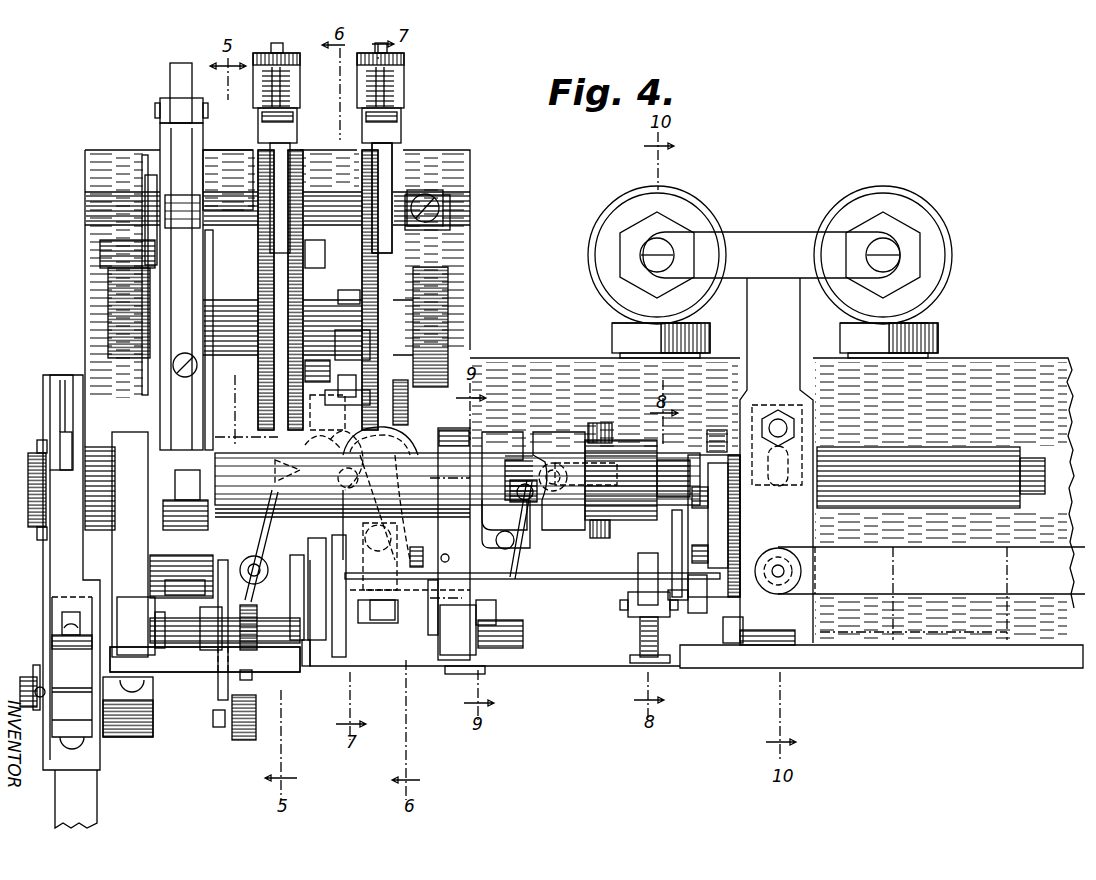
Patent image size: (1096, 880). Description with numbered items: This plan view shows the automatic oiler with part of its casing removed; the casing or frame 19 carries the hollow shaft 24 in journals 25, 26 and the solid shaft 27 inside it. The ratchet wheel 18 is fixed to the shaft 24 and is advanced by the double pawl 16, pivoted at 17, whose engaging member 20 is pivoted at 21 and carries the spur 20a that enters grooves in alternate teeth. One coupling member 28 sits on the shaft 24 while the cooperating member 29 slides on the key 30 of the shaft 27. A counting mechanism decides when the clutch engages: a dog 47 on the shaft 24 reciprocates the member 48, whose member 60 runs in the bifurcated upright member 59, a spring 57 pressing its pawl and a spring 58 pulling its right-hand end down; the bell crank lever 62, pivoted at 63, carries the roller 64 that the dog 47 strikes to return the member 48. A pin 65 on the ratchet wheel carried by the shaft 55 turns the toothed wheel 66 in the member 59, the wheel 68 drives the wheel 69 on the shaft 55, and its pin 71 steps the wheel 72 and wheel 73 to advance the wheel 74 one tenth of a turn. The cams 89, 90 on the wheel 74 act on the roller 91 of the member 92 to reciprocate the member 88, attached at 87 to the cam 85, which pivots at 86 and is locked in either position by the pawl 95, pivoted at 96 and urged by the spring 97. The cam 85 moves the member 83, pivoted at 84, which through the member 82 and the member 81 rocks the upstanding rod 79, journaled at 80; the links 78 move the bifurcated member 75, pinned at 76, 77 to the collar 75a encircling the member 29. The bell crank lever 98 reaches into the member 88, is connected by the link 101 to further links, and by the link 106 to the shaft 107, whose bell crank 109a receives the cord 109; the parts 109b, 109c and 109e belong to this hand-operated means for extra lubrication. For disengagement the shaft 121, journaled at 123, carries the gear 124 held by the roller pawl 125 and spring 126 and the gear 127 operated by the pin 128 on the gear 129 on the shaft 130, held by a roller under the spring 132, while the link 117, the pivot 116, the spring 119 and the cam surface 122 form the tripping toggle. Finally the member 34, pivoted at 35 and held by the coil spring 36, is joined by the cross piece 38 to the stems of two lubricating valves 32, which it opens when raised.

The spring 58 is at (200, 112).
The upright member 59 is at (182, 143).
The spring 57 is at (190, 312).
The member 48 is at (200, 178).
The toothed wheel 66 is at (165, 222).
The pin 65 is at (108, 288).
The shaft 55 is at (105, 325).
The member 60 is at (206, 262).
The second toothed wheel 68 is at (252, 290).
The wheel 69 is at (293, 293).
The wheel 72 is at (322, 254).
The cam 90 is at (346, 290).
The cam 89 is at (352, 332).
The roller 91 is at (346, 375).
The pin 71 is at (312, 378).
The member 88 is at (320, 530).
The member 92 is at (327, 412).
The wheel 73 is at (380, 195).
The wheel 74 is at (412, 256).
The lubricating valve 32 is at (690, 218).
The cross piece 38 is at (776, 233).
The member 34 is at (780, 330).
The solid shaft 27 is at (1030, 465).
The casing 19 is at (1022, 506).
The coil spring 36 is at (790, 548).
The pivot 35 is at (775, 648).
The journal 25 is at (485, 445).
The shaft 24 is at (96, 445).
The journal 26 is at (125, 440).
The ratchet wheel 18 is at (50, 414).
The spur 20a is at (62, 443).
The engaging member 20 is at (60, 540).
The pivot 21 is at (27, 539).
The pivot 17 is at (25, 677).
The pawl 16 is at (50, 768).
The roller 64 is at (175, 500).
The dog 47 is at (183, 472).
The pivot 63 is at (152, 578).
The cord 109 is at (190, 575).
The member 62 is at (200, 596).
The linkage part 109b is at (212, 650).
The linkage part 109c is at (225, 690).
The bell crank 109a is at (262, 672).
The linkage part 109e is at (252, 630).
The link 106 is at (209, 659).
The shaft 107 is at (308, 664).
The bell crank lever 98 is at (292, 604).
The pivot 96 is at (262, 573).
The spring 97 is at (265, 560).
The pawl 95 is at (275, 470).
The cam 85 is at (314, 440).
The attachment point 87 is at (338, 456).
The pivot 86 is at (338, 476).
The pivot 84 is at (400, 470).
The member 83 is at (400, 436).
The member 82 is at (400, 535).
The journal 80 is at (490, 540).
The member 81 is at (538, 528).
The shaft 121 is at (565, 580).
The cam surface 122 is at (496, 620).
The pivot 116 is at (523, 637).
The spring 119 is at (484, 670).
The link 117 is at (429, 612).
The link 101 is at (378, 623).
The clutch member 28 is at (512, 444).
The clutch member 29 is at (570, 436).
The pin 77 is at (612, 426).
The collar 75a is at (612, 476).
The bifurcated member 75 is at (583, 522).
The pin 76 is at (599, 540).
The links 78 is at (538, 500).
The upstanding rod 79 is at (524, 546).
The key 30 is at (666, 460).
The spring 132 is at (714, 430).
The gear 129 is at (718, 516).
The shaft 130 is at (690, 492).
The pin 128 is at (690, 553).
The gear 124 is at (648, 560).
The roller pawl 125 is at (630, 614).
The spring 126 is at (640, 641).
The journal 123 is at (678, 600).
The gear 127 is at (700, 608).